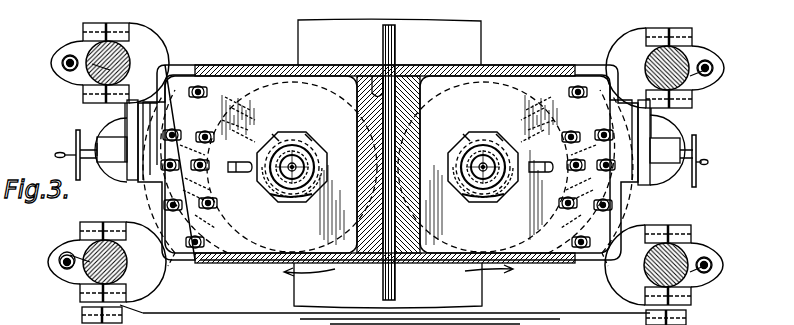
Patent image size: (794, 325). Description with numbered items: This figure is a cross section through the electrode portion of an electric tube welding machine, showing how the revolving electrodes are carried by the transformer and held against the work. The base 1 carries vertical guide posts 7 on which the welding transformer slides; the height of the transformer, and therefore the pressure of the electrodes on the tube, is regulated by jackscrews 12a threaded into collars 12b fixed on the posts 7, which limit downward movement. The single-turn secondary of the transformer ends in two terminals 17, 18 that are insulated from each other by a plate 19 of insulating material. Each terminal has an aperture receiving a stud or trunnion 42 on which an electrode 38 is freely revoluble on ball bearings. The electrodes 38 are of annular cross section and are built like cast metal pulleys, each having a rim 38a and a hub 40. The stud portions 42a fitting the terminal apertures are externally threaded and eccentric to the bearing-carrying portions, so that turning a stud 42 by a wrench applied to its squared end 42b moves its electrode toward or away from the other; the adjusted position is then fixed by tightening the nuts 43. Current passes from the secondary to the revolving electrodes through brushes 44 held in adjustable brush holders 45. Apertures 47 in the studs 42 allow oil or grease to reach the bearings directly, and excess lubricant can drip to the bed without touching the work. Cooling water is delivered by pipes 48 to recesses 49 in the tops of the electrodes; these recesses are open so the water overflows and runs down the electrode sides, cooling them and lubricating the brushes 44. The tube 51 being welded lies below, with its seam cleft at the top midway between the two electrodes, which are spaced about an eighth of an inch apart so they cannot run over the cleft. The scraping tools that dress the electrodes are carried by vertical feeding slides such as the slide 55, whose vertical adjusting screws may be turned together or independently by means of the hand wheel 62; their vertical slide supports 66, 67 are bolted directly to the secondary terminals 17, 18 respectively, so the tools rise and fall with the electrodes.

The base 1 is at (468, 300).
The guide posts 7 is at (96, 48).
The jackscrews 12a is at (740, 258).
The collars 12b is at (738, 318).
The secondary terminal 17 is at (308, 167).
The secondary terminal 18 is at (472, 167).
The insulating plate 19 is at (380, 64).
The electrodes 38 is at (248, 66).
The rim 38a is at (535, 262).
The hub 40 is at (300, 198).
The studs or trunnions 42 is at (280, 190).
The eccentric stud portions 42a is at (475, 134).
The squared ends 42b is at (310, 134).
The nuts 43 is at (281, 215).
The brushes 44 is at (204, 256).
The brush holders 45 is at (388, 194).
The lubricating apertures 47 is at (312, 185).
The pipes 48 is at (240, 173).
The recesses 49 is at (448, 266).
The tube 51 is at (398, 49).
The vertical tool feeding slide 55 is at (92, 140).
The hand wheel 62 is at (108, 165).
The vertical slide support 66 is at (646, 185).
The vertical slide support 67 is at (132, 180).